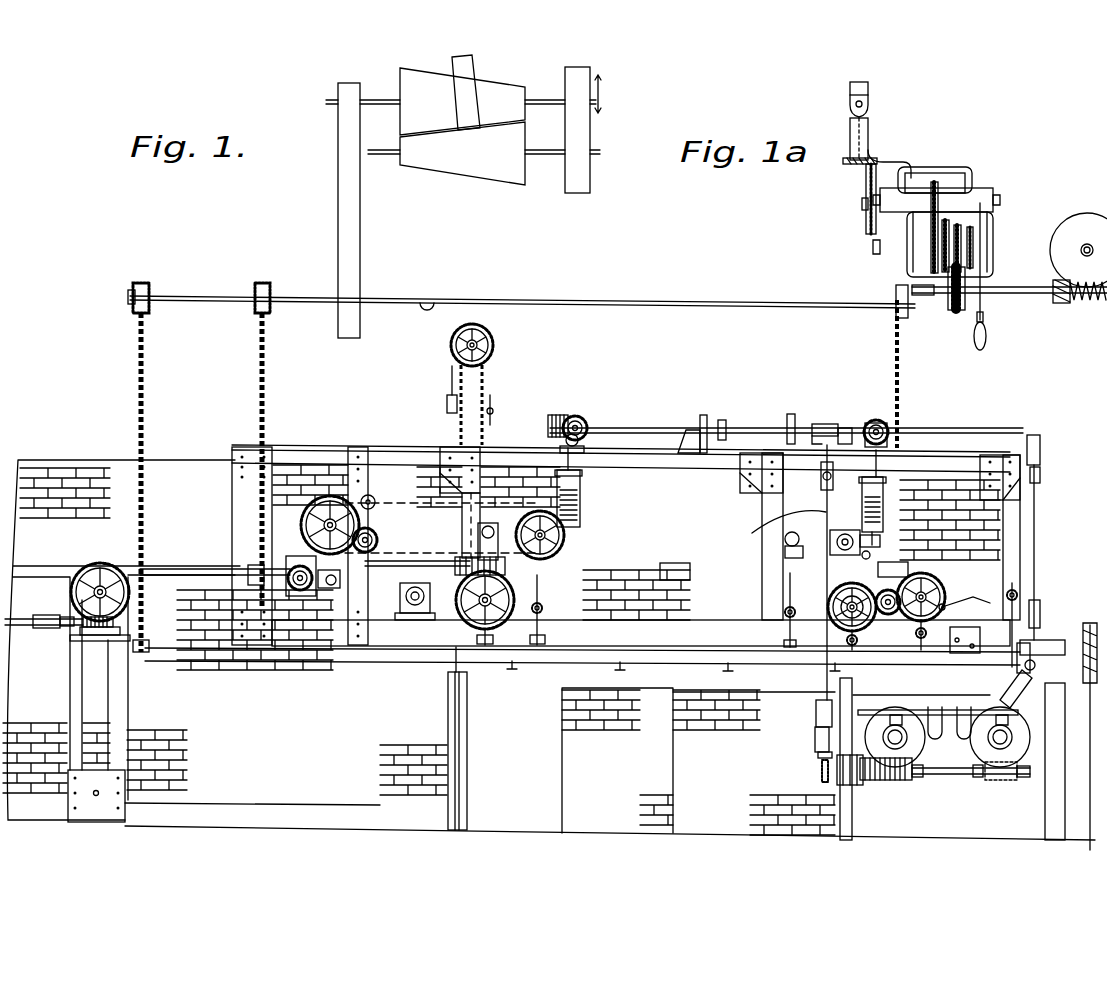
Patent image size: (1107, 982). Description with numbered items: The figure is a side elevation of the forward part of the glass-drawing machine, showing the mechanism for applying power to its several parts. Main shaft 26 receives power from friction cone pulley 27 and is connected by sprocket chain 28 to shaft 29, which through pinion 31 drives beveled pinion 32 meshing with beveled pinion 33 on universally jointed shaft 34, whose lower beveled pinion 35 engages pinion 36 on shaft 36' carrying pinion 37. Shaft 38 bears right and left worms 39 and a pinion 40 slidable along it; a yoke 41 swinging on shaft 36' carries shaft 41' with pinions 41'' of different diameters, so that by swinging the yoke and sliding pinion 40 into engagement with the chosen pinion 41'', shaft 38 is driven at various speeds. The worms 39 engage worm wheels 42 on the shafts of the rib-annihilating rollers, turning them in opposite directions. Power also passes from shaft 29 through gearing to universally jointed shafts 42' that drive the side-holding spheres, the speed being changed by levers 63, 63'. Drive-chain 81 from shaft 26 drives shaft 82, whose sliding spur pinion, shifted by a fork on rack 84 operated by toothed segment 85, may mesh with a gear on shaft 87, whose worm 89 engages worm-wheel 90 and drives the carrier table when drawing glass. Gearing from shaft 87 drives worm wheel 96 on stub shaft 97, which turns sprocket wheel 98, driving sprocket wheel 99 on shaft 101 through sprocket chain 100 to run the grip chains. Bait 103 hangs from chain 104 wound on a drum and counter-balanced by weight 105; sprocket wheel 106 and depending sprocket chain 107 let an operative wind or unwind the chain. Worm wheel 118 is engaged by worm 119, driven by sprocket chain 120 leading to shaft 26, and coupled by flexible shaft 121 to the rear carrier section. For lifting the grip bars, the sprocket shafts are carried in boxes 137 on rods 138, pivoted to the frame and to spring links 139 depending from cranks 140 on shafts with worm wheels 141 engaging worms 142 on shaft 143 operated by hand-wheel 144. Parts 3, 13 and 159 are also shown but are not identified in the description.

In FIG. 1A, the gear housing 3 is at (975, 200).
In FIG. 1, the vertical rod 13 is at (829, 530).
In FIG. 1, the main shaft 26 is at (613, 300).
In FIG. 1, the friction cone pulley 27 is at (486, 170).
In FIG. 1, the sprocket chain 28 is at (895, 350).
In FIG. 1, the shaft 29 is at (930, 428).
In FIG. 1, the pinion 31 is at (791, 414).
In FIG. 1, the beveled pinion 32 is at (820, 423).
In FIG. 1, the beveled pinion 33 is at (845, 427).
In FIG. 1, the universally jointed shaft 34 is at (760, 528).
In FIG. 1A, the universally jointed shaft 34 is at (866, 93).
In FIG. 1, the beveled pinion 35 is at (817, 755).
In FIG. 1A, the beveled pinion 35 is at (845, 164).
In FIG. 1, the pinion 36 is at (815, 770).
In FIG. 1A, the pinion 36 is at (842, 204).
In FIG. 1A, the shaft 36' is at (836, 204).
In FIG. 1A, the pinion 37 is at (936, 186).
In FIG. 1, the shaft 38 is at (950, 778).
In FIG. 1A, the shaft 38 is at (1006, 290).
In FIG. 1, the right and left worms 39 is at (900, 782).
In FIG. 1A, the right and left worms 39 is at (1072, 300).
In FIG. 1A, the pinion 40 is at (953, 308).
In FIG. 1A, the yoke 41 is at (927, 276).
In FIG. 1A, the shaft 41' is at (903, 248).
In FIG. 1A, the pinions 41'' is at (997, 207).
In FIG. 1, the worm wheel 42 is at (944, 737).
In FIG. 1A, the worm wheel 42 is at (1059, 258).
In FIG. 1, the universally jointed shaft 42' is at (1046, 537).
In FIG. 1, the lever 63 is at (972, 624).
In FIG. 1, the lever 63' is at (964, 590).
In FIG. 1, the drive-chain 81 is at (263, 366).
In FIG. 1, the shaft 82 is at (250, 577).
In FIG. 1, the rack 84 is at (330, 590).
In FIG. 1, the toothed segment 85 is at (401, 598).
In FIG. 1, the shaft 87 is at (406, 563).
In FIG. 1, the worm 89 is at (458, 570).
In FIG. 1, the worm-wheel 90 is at (466, 617).
In FIG. 1, the worm wheel 96 is at (332, 515).
In FIG. 1, the stub shaft 97 is at (366, 527).
In FIG. 1, the sprocket wheel 98 is at (372, 497).
In FIG. 1, the sprocket wheel 99 is at (567, 540).
In FIG. 1, the sprocket chain 100 is at (418, 506).
In FIG. 1, the shaft 101 is at (544, 548).
In FIG. 1, the bait 103 is at (493, 422).
In FIG. 1, the chain 104 is at (490, 380).
In FIG. 1, the weight 105 is at (446, 407).
In FIG. 1, the sprocket wheel 106 is at (492, 354).
In FIG. 1, the sprocket chain 107 is at (484, 452).
In FIG. 1, the worm wheel 118 is at (117, 553).
In FIG. 1, the worm 119 is at (100, 636).
In FIG. 1, the sprocket chain 120 is at (143, 400).
In FIG. 1, the flexible shaft 121 is at (33, 627).
In FIG. 1, the boxes 137 is at (843, 553).
In FIG. 1, the rods 138 is at (812, 543).
In FIG. 1, the spring links 139 is at (876, 516).
In FIG. 1, the cranks 140 is at (586, 443).
In FIG. 1, the worm wheels 141 is at (582, 430).
In FIG. 1, the worms 142 is at (570, 415).
In FIG. 1, the shaft 143 is at (738, 420).
In FIG. 1, the hand-wheel 144 is at (703, 413).
In FIG. 1, the spring 159 is at (581, 516).